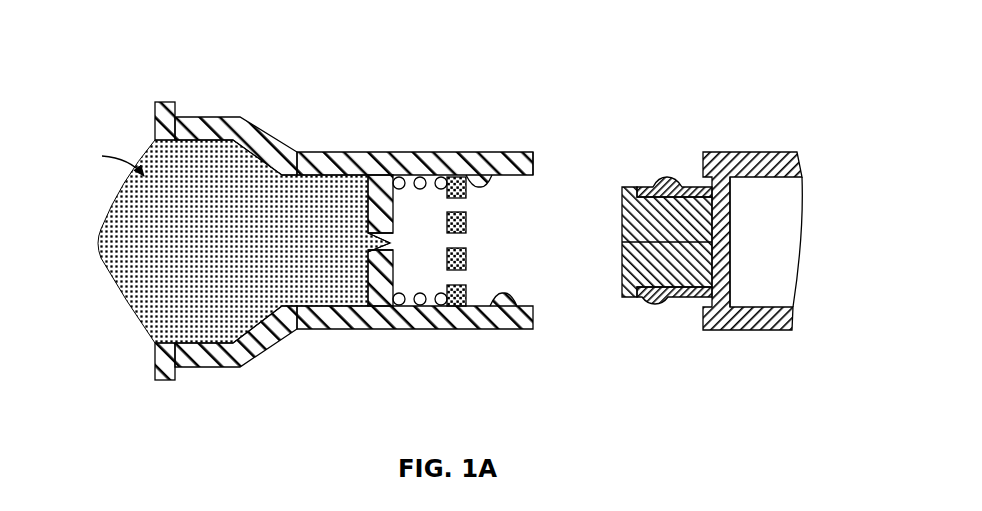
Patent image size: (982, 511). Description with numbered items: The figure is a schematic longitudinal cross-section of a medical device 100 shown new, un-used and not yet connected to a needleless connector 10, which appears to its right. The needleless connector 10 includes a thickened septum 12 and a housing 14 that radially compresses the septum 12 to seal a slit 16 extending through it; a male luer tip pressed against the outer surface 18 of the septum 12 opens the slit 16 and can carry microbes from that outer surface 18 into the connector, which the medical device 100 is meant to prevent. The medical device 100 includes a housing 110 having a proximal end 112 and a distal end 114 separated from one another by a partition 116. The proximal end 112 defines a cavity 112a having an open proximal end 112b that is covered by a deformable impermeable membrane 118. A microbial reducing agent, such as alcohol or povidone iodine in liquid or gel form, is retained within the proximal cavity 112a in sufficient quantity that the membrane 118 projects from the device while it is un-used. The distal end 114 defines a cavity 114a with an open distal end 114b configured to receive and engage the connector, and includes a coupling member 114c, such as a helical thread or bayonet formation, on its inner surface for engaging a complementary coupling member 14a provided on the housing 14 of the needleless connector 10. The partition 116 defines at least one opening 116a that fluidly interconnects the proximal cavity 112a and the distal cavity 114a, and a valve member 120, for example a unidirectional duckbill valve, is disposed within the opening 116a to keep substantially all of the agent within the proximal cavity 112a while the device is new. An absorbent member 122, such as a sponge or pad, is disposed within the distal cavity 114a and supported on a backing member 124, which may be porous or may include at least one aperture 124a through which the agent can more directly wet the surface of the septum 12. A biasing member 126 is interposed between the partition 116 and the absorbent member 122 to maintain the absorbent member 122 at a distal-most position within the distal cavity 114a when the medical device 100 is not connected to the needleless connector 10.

The needleless connector 10 is at (706, 231).
The septum 12 is at (737, 268).
The housing 14 is at (680, 320).
The complementary coupling member 14a is at (655, 303).
The slit 16 is at (713, 240).
The outer surface 18 is at (621, 213).
The medical device 100 is at (329, 225).
The housing 110 is at (335, 146).
The proximal end 112 is at (280, 128).
The proximal cavity 112a is at (185, 135).
The open proximal end 112b is at (155, 345).
The distal end 114 is at (515, 145).
The distal cavity 114a is at (427, 173).
The open distal end 114b is at (537, 175).
The coupling member 114c is at (503, 298).
The partition 116 is at (361, 283).
The opening 116a is at (368, 245).
The impermeable membrane 118 is at (118, 302).
The valve member 120 is at (382, 246).
The absorbent member 122 is at (473, 266).
The backing member 124 is at (455, 303).
The aperture 124a is at (468, 234).
The biasing member 126 is at (418, 305).